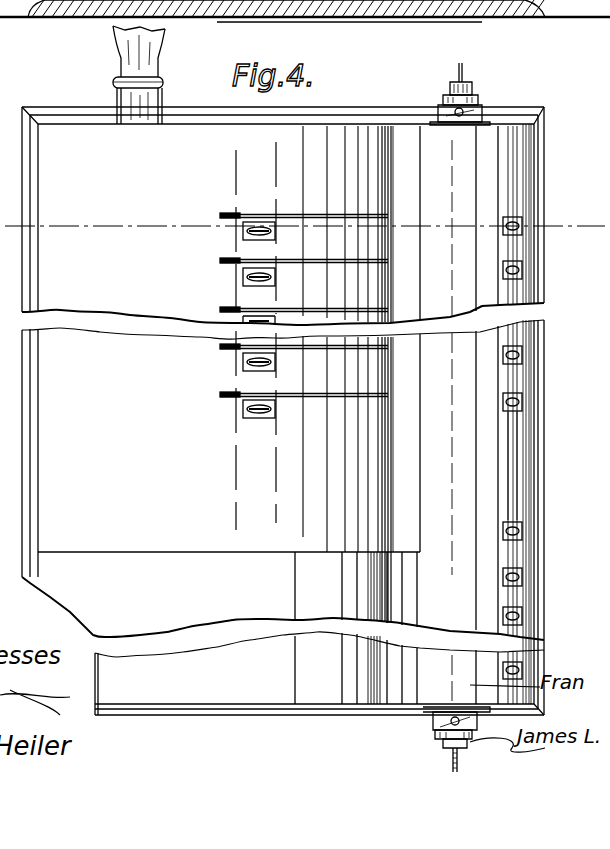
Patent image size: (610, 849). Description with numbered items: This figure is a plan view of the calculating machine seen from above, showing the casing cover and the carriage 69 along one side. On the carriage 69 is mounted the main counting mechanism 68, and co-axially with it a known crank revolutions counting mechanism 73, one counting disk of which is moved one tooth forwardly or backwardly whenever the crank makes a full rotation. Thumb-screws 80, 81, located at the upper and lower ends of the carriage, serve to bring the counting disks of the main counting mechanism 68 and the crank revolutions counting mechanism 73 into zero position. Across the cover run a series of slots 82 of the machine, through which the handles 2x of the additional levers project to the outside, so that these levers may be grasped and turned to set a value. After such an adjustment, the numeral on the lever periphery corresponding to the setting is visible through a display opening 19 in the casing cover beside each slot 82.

The thumb-screw 80 is at (463, 70).
The thumb-screw 81 is at (458, 753).
The slot 82 is at (280, 216).
The display opening 19 is at (243, 283).
The handle 2x is at (232, 398).
The main counting mechanism 68 is at (523, 220).
The carriage 69 is at (515, 447).
The crank revolutions counting mechanism 73 is at (523, 612).